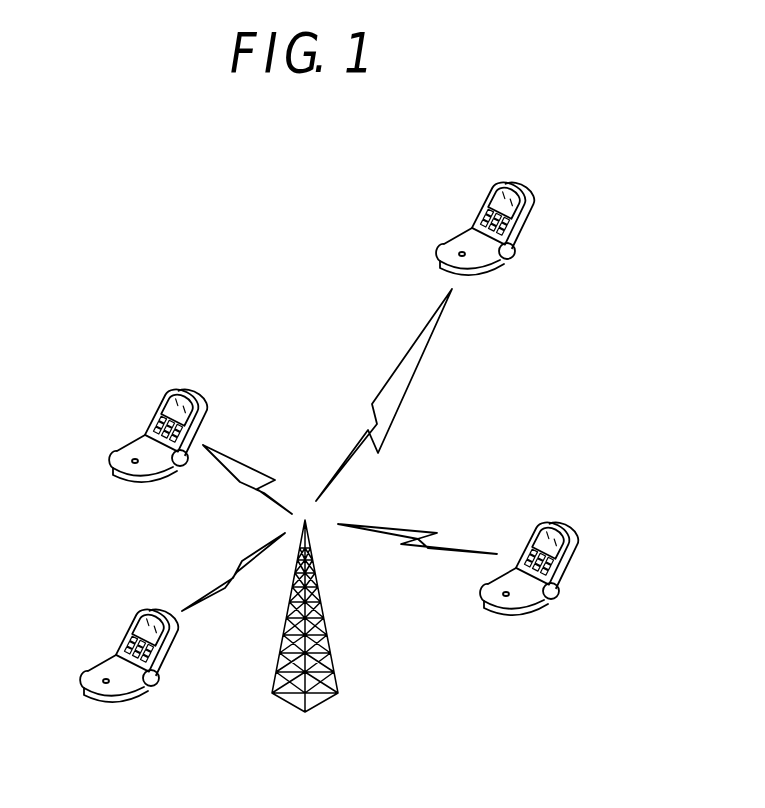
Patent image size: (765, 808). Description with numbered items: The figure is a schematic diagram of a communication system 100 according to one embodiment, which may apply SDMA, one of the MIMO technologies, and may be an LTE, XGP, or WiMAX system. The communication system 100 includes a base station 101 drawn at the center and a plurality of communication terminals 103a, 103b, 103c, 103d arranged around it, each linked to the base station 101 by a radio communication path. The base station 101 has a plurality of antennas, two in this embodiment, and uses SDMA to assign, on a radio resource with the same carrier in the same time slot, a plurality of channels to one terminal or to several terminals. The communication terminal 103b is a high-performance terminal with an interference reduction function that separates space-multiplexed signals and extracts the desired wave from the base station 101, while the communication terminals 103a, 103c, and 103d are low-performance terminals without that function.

The communication system 100 is at (250, 258).
The base station 101 is at (333, 639).
The communication terminal 103a is at (151, 407).
The communication terminal 103b is at (483, 212).
The communication terminal 103c is at (572, 567).
The communication terminal 103d is at (126, 637).